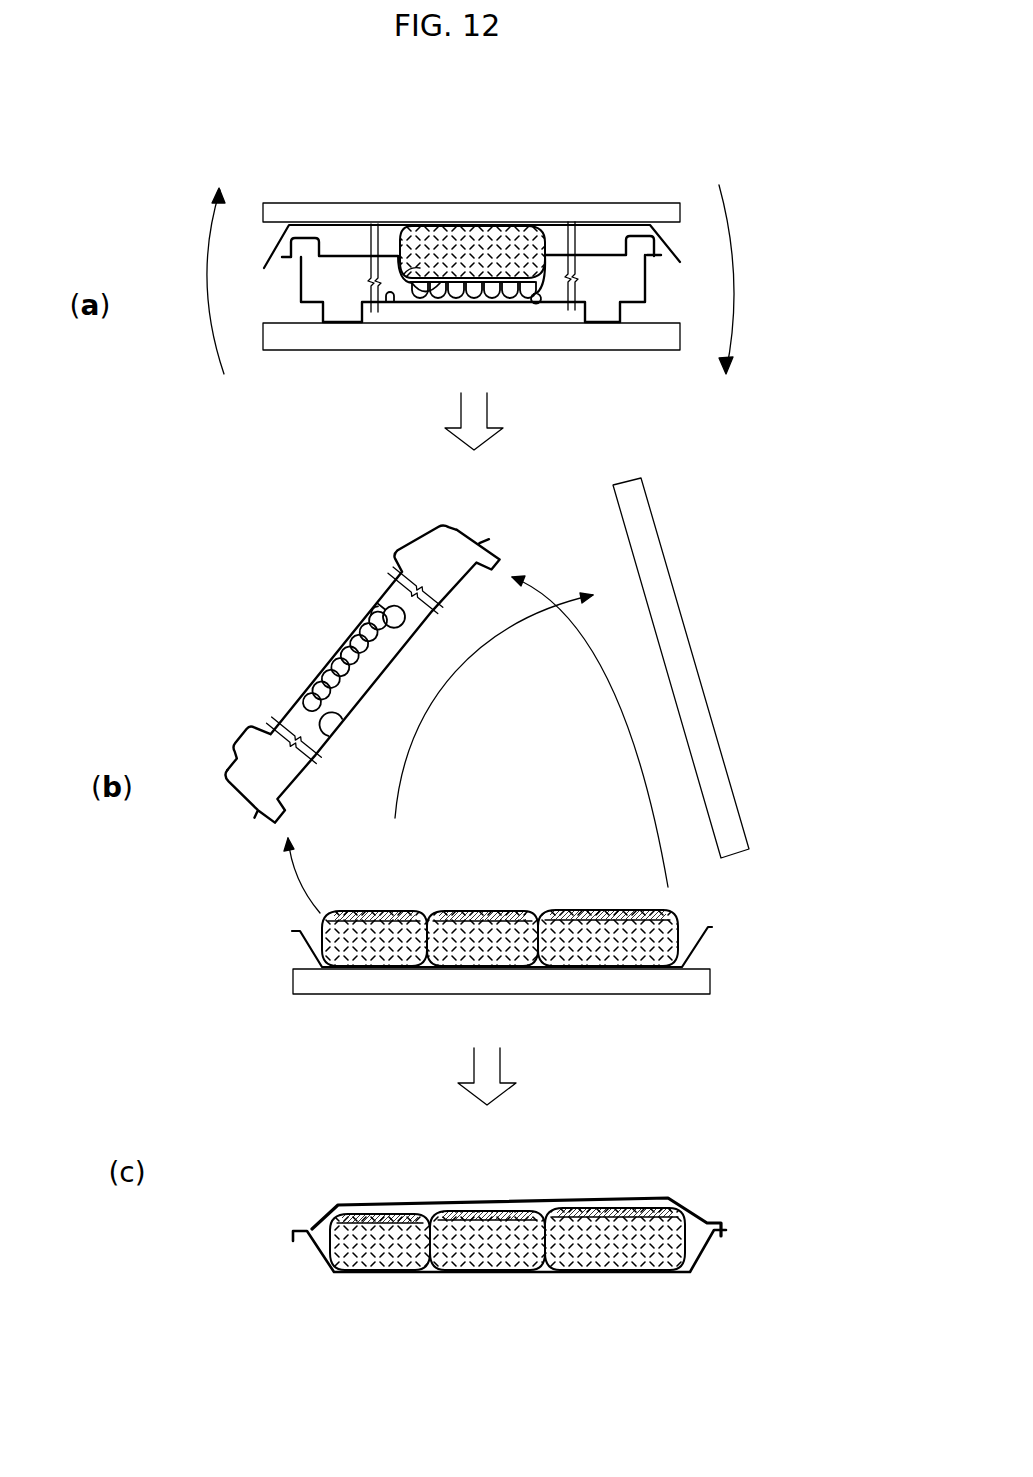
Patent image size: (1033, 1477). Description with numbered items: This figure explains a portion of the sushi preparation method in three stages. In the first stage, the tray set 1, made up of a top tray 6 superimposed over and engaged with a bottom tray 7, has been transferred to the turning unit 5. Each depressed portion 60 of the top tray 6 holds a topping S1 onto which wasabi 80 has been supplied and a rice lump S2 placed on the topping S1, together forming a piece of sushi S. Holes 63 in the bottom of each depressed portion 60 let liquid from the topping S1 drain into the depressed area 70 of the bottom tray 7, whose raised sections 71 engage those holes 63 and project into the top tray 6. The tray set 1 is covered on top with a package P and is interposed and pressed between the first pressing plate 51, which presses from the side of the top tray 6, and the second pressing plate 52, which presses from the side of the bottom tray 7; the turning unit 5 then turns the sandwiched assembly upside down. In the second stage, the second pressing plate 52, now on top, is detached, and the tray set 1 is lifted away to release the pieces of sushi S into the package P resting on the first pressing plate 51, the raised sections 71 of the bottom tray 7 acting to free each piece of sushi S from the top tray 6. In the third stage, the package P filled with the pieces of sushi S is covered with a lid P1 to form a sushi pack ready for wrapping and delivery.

The tray set 1 is at (408, 557).
The turning unit 5 is at (737, 222).
The top tray 6 is at (316, 258).
The bottom tray 7 is at (296, 302).
The first pressing plate 51 is at (627, 203).
The second pressing plate 52 is at (663, 337).
The depressed portion 60 is at (372, 667).
The holes 63 is at (510, 277).
The depressed area 70 is at (385, 302).
The raised sections 71 is at (510, 287).
The wasabi 80 is at (490, 256).
The piece of sushi S is at (503, 743).
The topping S1 is at (432, 238).
The rice lump S2 is at (460, 232).
The package P is at (285, 236).
The lid P1 is at (690, 1210).